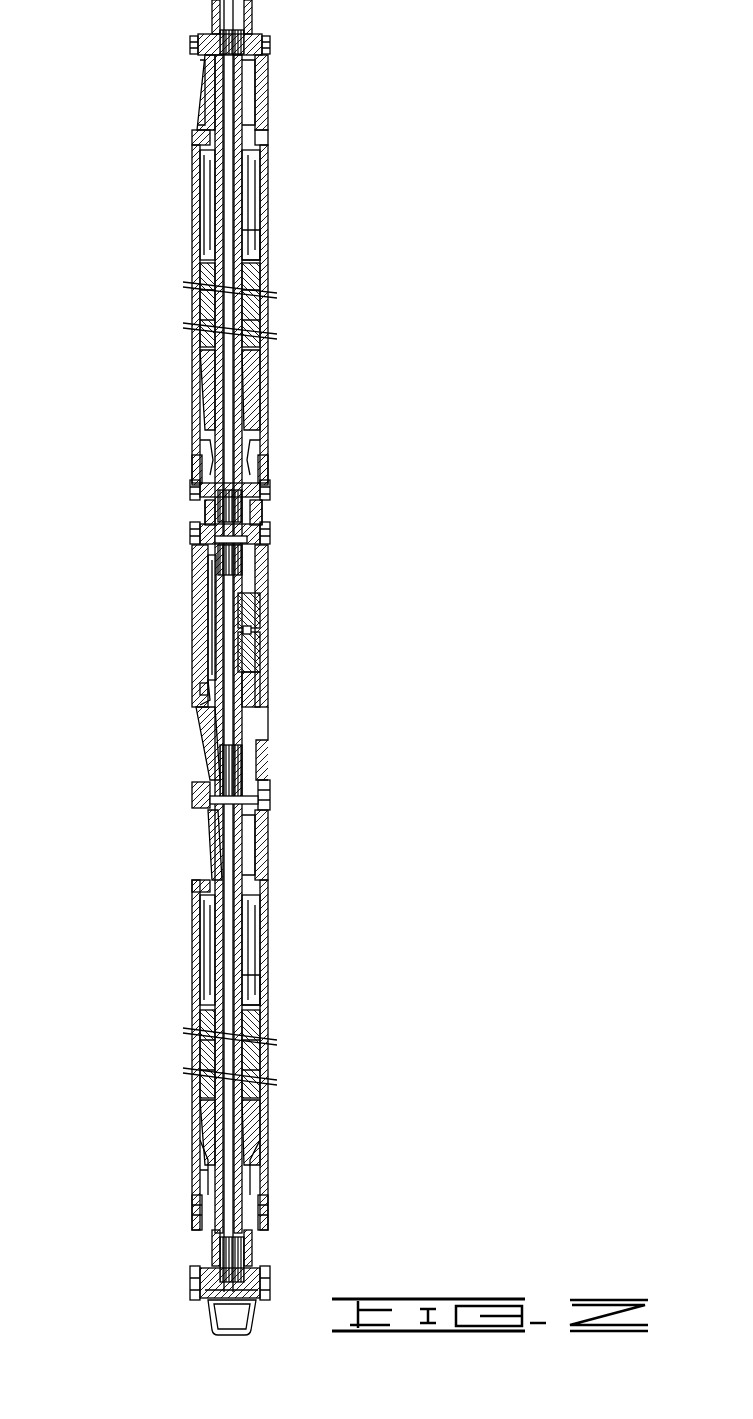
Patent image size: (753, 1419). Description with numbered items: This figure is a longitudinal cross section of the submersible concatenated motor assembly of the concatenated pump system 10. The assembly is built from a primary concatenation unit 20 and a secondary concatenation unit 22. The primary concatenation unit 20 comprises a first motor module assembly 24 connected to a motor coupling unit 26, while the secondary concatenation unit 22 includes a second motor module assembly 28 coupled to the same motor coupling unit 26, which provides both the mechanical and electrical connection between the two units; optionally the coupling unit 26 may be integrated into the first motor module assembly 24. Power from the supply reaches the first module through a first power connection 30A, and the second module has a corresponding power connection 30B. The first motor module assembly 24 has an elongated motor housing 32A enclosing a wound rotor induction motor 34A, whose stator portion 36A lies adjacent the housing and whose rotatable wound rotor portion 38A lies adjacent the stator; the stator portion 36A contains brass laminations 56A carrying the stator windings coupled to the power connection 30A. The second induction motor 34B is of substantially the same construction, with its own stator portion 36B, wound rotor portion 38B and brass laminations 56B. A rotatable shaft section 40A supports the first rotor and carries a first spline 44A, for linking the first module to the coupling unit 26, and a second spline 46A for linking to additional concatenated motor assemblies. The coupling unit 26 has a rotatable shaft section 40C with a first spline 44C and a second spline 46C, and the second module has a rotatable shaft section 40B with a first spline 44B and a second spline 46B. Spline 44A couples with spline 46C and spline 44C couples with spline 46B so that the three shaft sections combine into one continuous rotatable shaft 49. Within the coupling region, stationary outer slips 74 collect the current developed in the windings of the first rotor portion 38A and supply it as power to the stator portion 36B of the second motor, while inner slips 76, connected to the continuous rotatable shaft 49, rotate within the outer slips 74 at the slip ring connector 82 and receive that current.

The concatenated pump system 10 is at (122, 60).
The primary concatenation unit 20 is at (236, 1055).
The secondary concatenation unit 22 is at (243, 315).
The first motor module assembly 24 is at (272, 1070).
The motor coupling unit 26 is at (243, 672).
The second motor module assembly 28 is at (272, 317).
The first power connection 30A is at (205, 932).
The power connection 30B is at (205, 183).
The elongated motor housing 32A is at (198, 1145).
The wound rotor induction motor 34A is at (268, 963).
The second induction motor 34B is at (270, 386).
The stator portion 36A is at (268, 985).
The stator portion 36B is at (270, 240).
The wound rotor portion 38A is at (198, 1096).
The wound rotor portion 38B is at (200, 368).
The rotatable shaft section 40A is at (268, 1105).
The rotatable shaft section 40B is at (262, 180).
The rotatable shaft section 40C is at (262, 707).
The first spline 44A is at (265, 780).
The first spline 44B is at (252, 12).
The first spline 44C is at (222, 558).
The second spline 46A is at (220, 1252).
The second spline 46B is at (255, 505).
The second spline 46C is at (216, 754).
The continuous rotatable shaft 49 is at (218, 107).
The brass laminations 56A is at (200, 1050).
The brass laminations 56B is at (198, 302).
The stationary outer slips 74 is at (262, 643).
The inner slips 76 is at (262, 617).
The slip ring connector 82 is at (212, 620).